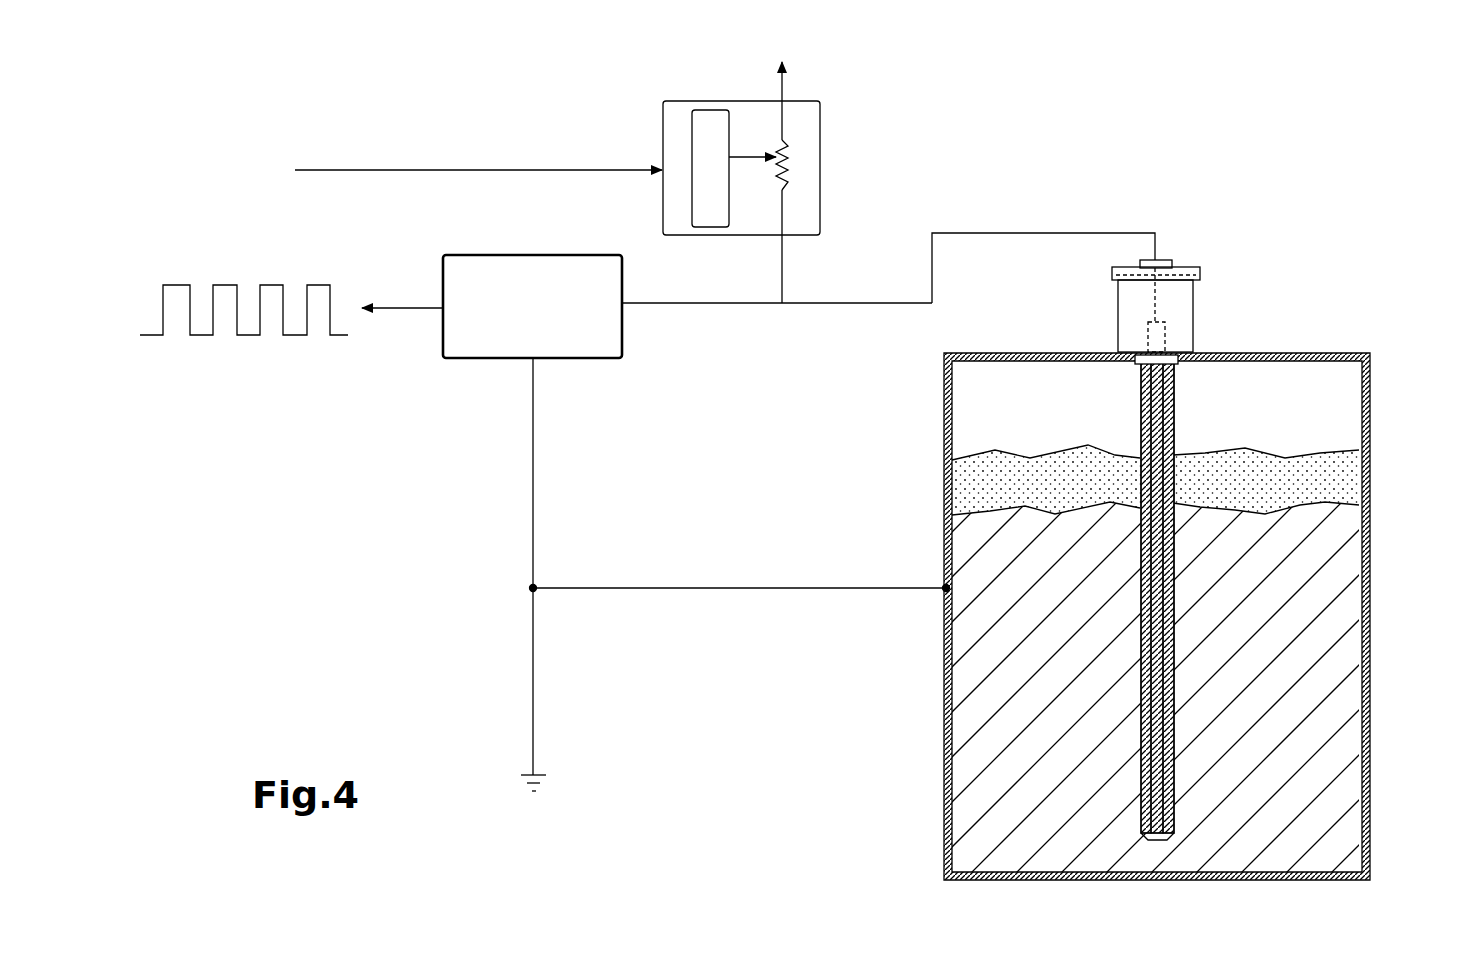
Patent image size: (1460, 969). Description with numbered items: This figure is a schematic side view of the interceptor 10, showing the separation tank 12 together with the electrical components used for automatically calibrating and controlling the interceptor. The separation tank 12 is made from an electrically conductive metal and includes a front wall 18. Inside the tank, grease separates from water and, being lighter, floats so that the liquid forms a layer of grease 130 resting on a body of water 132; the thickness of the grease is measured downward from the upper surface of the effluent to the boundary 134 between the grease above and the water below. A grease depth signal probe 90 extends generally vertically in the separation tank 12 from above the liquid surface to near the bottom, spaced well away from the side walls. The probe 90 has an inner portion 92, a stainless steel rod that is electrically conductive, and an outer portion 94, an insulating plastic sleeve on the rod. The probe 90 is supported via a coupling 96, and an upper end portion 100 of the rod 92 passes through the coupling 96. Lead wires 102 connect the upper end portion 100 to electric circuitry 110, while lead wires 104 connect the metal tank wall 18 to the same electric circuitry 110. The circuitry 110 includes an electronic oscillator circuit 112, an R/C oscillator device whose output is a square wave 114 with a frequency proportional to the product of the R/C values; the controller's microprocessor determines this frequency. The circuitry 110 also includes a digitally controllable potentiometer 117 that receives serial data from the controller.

The interceptor 10 is at (484, 664).
The separation tank 12 is at (942, 418).
The front wall 18 is at (943, 542).
The grease depth signal probe 90 is at (1015, 601).
The inner portion 92 is at (1160, 663).
The outer portion 94 is at (1140, 637).
The coupling 96 is at (1180, 365).
The upper end portion 100 is at (1165, 338).
The lead wires 102 is at (1055, 232).
The lead wires 104 is at (650, 586).
The electric circuitry 110 is at (475, 387).
The electronic oscillator circuit 112 is at (560, 350).
The square wave 114 is at (224, 330).
The digitally controllable potentiometer 117 is at (820, 178).
The layer of grease 130 is at (1330, 485).
The body of water 132 is at (1312, 608).
The boundary 134 is at (1285, 505).